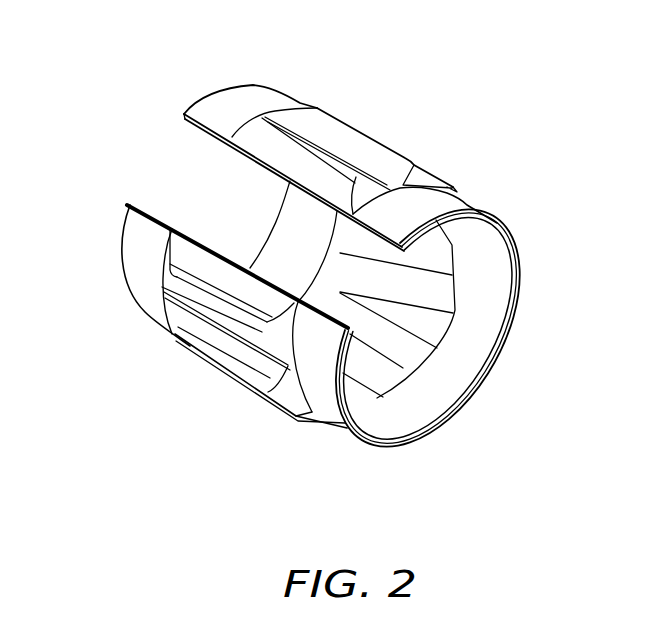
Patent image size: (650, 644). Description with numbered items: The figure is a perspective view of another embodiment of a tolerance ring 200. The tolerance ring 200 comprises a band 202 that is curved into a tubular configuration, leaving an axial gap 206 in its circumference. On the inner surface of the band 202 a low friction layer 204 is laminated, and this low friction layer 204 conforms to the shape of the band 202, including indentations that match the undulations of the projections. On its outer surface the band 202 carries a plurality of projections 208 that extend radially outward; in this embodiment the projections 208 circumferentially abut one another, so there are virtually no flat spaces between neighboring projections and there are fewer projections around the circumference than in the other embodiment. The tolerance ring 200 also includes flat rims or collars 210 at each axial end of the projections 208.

The tolerance ring 200 is at (470, 83).
The band 202 is at (127, 258).
The low friction layer 204 is at (490, 302).
The axial gap 206 is at (132, 154).
The projections 208 is at (232, 343).
The flat rims or collars 210 is at (228, 102).